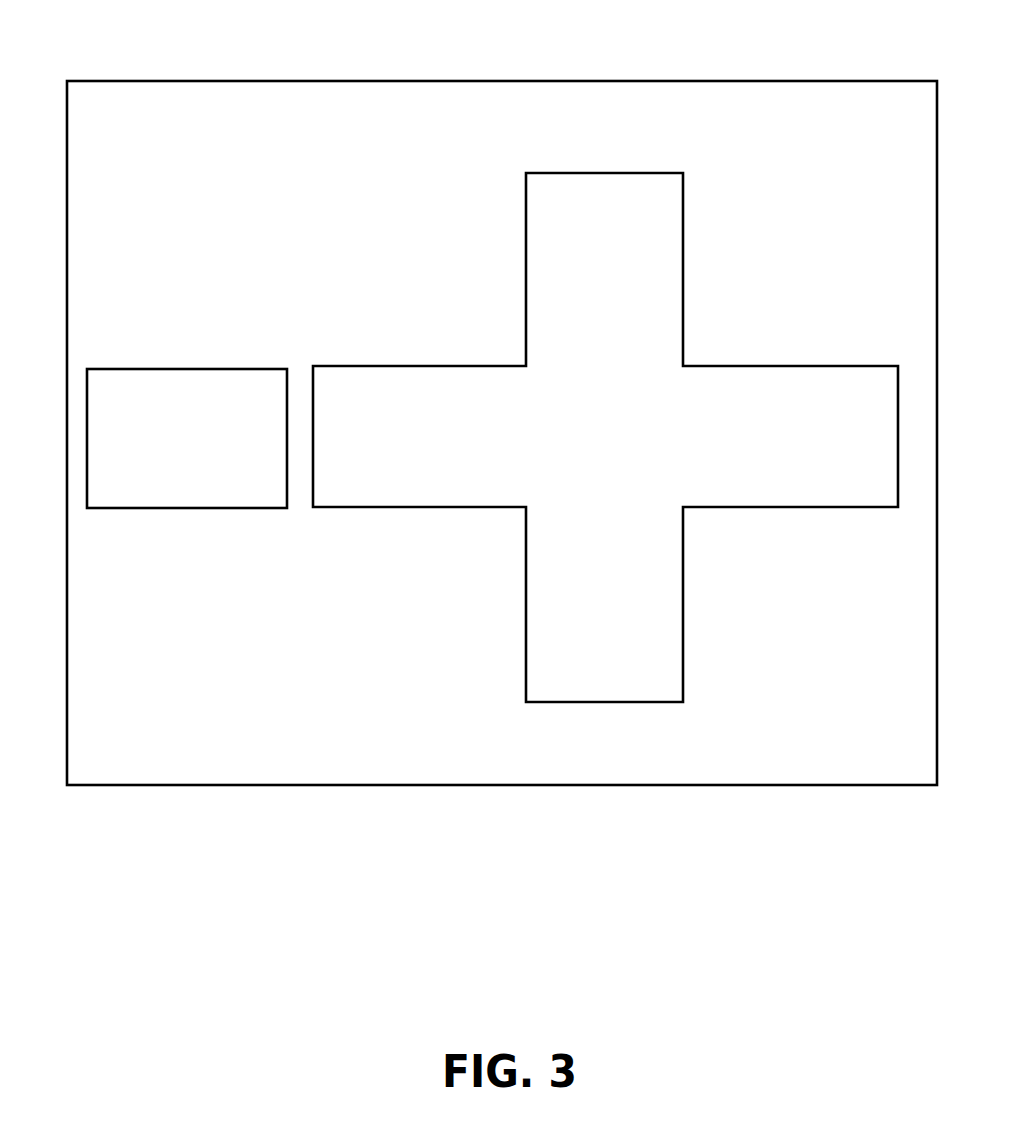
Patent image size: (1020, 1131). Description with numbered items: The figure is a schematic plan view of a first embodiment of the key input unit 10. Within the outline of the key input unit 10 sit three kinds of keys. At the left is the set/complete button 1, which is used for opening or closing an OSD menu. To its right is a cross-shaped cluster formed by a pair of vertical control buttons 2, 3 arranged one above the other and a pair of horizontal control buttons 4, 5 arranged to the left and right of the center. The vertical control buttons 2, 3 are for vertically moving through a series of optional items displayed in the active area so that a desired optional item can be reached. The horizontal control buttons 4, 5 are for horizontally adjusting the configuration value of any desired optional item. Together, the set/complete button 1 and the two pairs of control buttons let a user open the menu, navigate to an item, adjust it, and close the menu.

The key input unit 10 is at (540, 81).
The set/complete button 1 is at (235, 369).
The vertical control button 2 is at (597, 173).
The vertical control button 3 is at (585, 702).
The horizontal control button 4 is at (425, 366).
The horizontal control button 5 is at (738, 366).